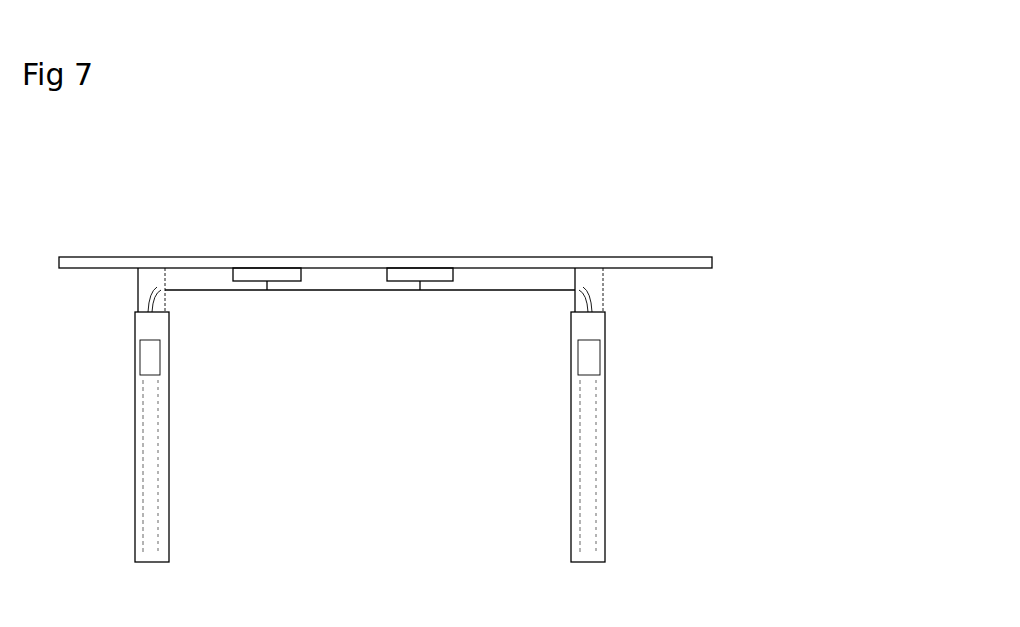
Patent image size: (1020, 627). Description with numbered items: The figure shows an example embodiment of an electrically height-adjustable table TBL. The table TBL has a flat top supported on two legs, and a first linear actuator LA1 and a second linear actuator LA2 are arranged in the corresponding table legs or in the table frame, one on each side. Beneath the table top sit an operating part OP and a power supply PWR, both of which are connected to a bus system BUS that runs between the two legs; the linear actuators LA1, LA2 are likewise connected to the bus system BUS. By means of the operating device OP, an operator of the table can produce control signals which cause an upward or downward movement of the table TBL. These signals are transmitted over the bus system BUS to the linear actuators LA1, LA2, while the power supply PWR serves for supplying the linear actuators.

The height-adjustable table TBL is at (414, 220).
The power supply PWR is at (265, 268).
The operating part OP is at (420, 268).
The bus system BUS is at (357, 308).
The first linear actuator LA1 is at (169, 436).
The second linear actuator LA2 is at (571, 418).